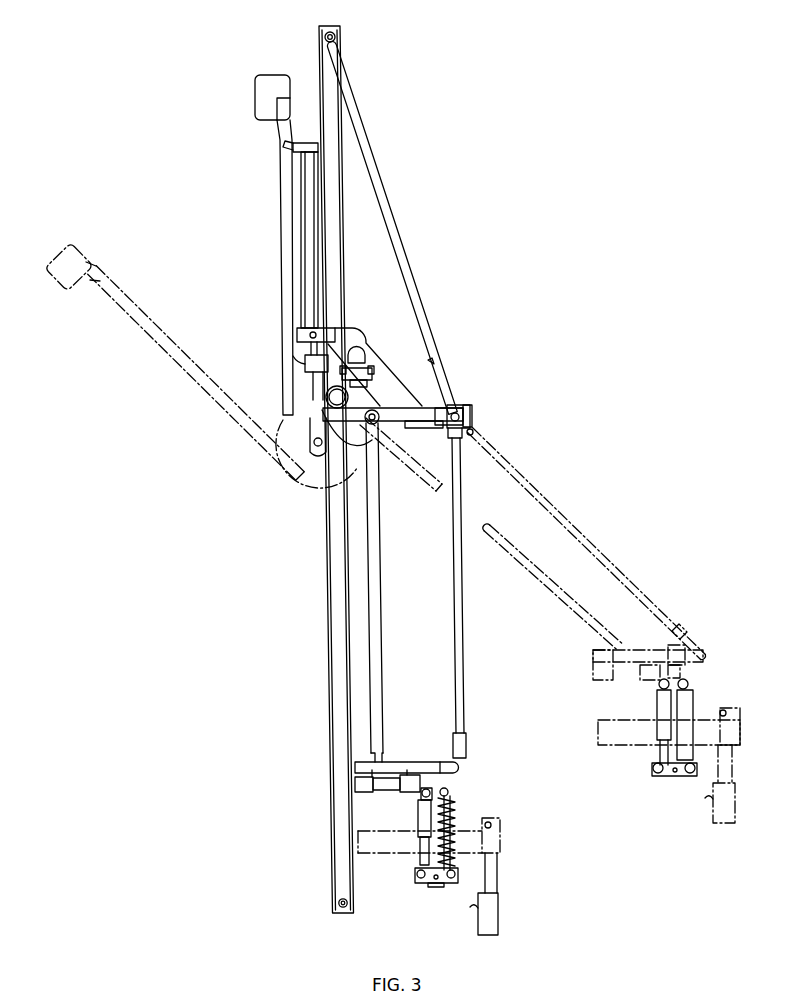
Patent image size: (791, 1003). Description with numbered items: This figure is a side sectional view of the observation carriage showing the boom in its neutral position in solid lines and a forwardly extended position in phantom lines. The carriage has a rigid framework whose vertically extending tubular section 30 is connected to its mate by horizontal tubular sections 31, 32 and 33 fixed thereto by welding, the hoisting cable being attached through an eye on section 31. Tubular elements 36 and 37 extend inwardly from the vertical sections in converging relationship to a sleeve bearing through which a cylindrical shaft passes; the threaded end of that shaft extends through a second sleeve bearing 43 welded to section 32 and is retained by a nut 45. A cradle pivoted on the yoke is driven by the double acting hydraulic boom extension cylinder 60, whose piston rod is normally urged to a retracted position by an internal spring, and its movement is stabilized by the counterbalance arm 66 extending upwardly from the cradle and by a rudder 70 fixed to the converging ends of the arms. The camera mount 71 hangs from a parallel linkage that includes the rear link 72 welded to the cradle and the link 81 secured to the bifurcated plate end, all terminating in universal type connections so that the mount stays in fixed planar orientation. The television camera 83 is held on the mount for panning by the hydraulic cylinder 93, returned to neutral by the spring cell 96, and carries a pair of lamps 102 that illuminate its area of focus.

The vertically extending tubular section 30 is at (327, 591).
The horizontal tubular section 31 is at (336, 35).
The horizontal tubular section 32 is at (349, 396).
The horizontal tubular section 33 is at (338, 903).
The tubular element 36 is at (443, 385).
The tubular element 37 is at (391, 213).
The second sleeve bearing 43 is at (314, 446).
The nut 45 is at (301, 439).
The boom extension cylinder 60 is at (311, 262).
The counterbalance arm 66 is at (280, 215).
The rudder 70 is at (280, 77).
The camera mount 71 is at (400, 764).
The rear link 72 is at (378, 590).
The link 81 is at (463, 590).
The television camera 83 is at (398, 846).
The double-acting hydraulic cylinder 93 is at (390, 785).
The spring cell 96 is at (456, 800).
The lamps 102 is at (479, 921).